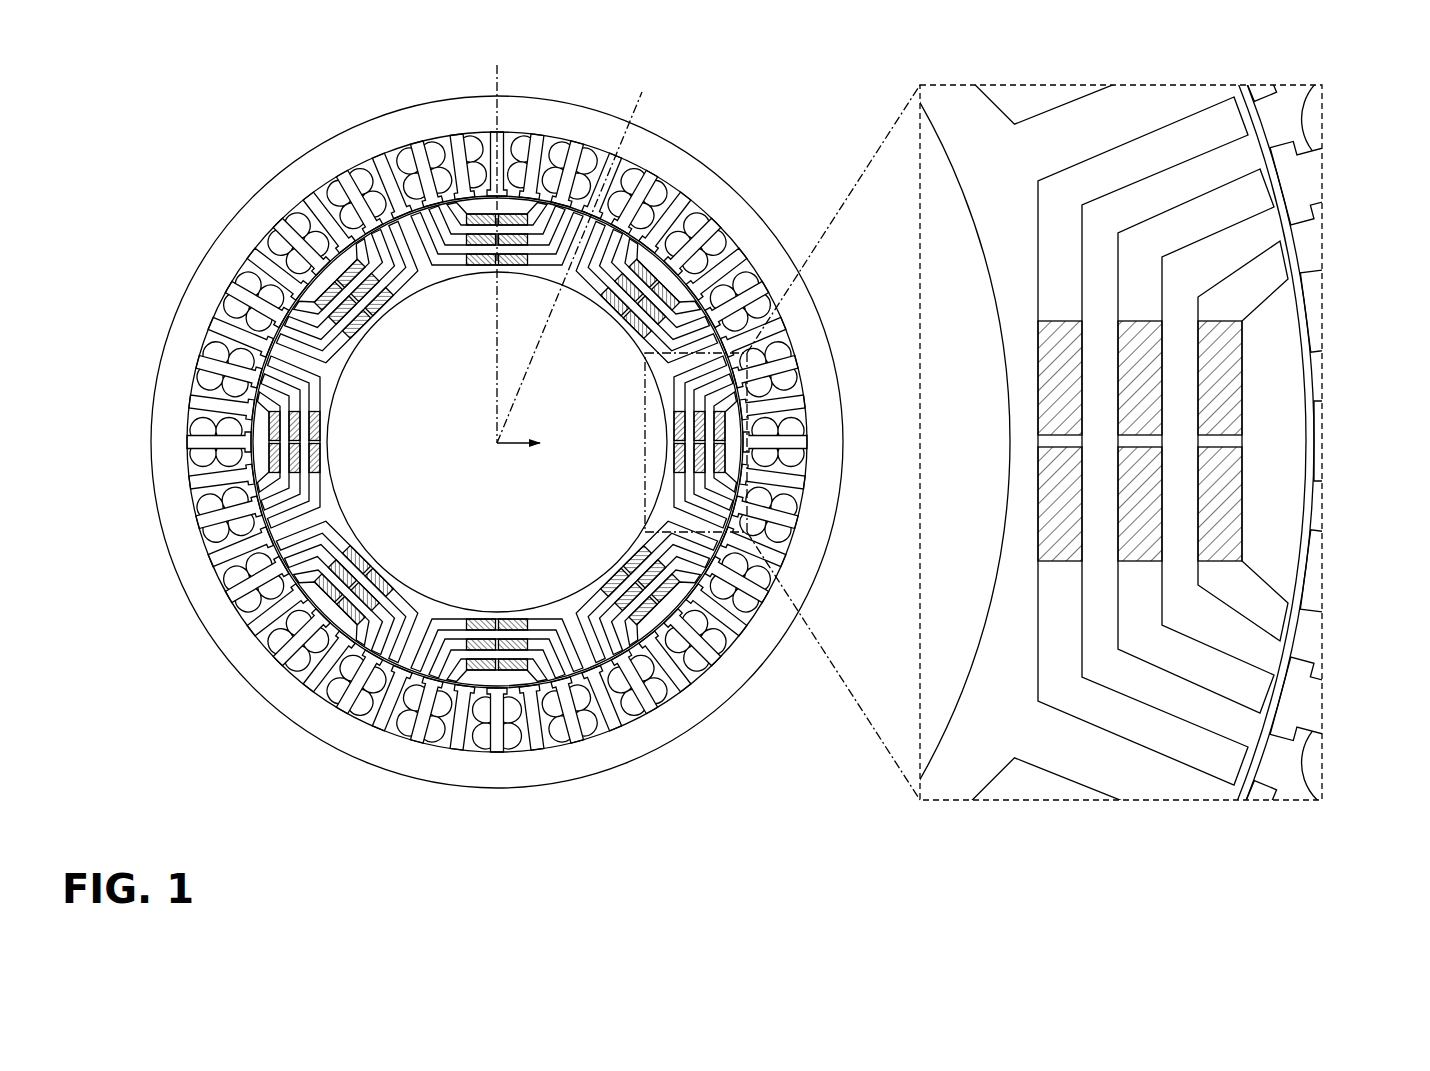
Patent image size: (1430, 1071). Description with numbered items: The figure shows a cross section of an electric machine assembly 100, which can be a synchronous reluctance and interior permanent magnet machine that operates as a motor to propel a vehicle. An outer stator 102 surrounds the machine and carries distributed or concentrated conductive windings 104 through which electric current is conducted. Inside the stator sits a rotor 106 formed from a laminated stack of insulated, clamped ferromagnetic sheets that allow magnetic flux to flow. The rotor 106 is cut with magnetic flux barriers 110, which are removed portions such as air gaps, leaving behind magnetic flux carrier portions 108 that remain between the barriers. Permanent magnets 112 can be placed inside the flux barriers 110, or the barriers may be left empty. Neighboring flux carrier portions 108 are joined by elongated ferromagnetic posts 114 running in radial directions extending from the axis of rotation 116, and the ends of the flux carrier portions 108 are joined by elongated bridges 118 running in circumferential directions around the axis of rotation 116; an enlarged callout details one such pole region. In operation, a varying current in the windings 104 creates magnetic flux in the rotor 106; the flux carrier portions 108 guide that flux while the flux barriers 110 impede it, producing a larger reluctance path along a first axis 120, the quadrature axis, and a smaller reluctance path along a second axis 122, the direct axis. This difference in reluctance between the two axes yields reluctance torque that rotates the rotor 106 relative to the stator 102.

The electric machine assembly 100 is at (207, 140).
The stator 102 is at (191, 490).
The conductive windings 104 is at (249, 277).
The rotor 106 is at (264, 403).
The magnetic flux carrier portions 108 is at (1178, 591).
The magnetic flux barriers 110 is at (1203, 673).
The permanent magnets 112 is at (1214, 522).
The ferromagnetic posts 114 is at (1153, 434).
The axis of rotation 116 is at (489, 439).
The bridges 118 is at (1285, 184).
The first axis 120 is at (487, 111).
The second axis 122 is at (647, 109).